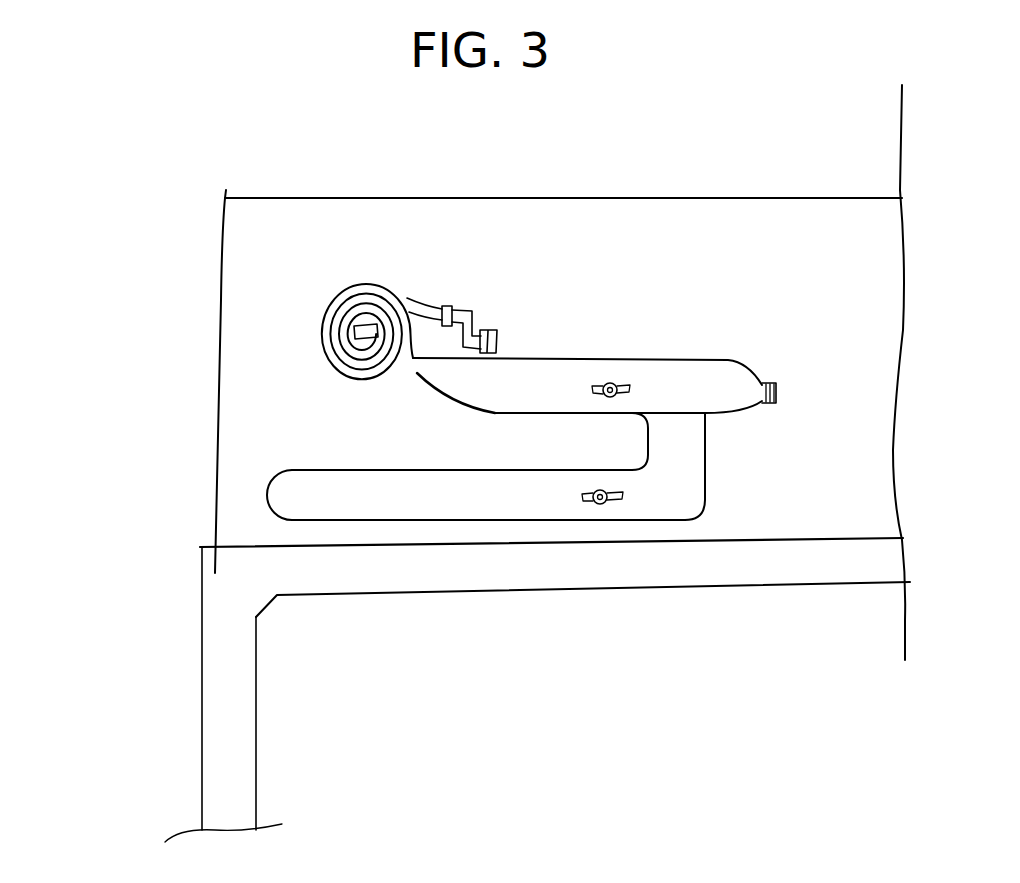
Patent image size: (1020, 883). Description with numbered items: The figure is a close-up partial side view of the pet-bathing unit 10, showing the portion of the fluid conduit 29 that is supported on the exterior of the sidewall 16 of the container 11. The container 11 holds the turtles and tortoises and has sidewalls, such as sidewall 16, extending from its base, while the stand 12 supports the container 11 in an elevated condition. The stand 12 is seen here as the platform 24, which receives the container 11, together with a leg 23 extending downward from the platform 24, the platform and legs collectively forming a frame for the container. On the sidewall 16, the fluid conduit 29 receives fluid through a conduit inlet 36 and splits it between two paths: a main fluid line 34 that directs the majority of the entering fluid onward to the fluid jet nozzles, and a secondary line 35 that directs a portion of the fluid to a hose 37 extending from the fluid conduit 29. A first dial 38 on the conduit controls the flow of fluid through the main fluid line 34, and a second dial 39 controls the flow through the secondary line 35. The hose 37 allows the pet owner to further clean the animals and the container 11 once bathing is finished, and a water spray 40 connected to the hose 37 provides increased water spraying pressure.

The pet-bathing unit 10 is at (195, 156).
The container 11 is at (220, 283).
The stand 12 is at (158, 617).
The sidewall 16 is at (645, 217).
The leg 23 is at (212, 753).
The platform 24 is at (387, 580).
The fluid conduit 29 is at (270, 498).
The main fluid line 34 is at (678, 483).
The secondary line 35 is at (670, 370).
The conduit inlet 36 is at (777, 400).
The hose 37 is at (383, 285).
The first dial 38 is at (600, 505).
The second dial 39 is at (613, 382).
The water spray 40 is at (493, 330).